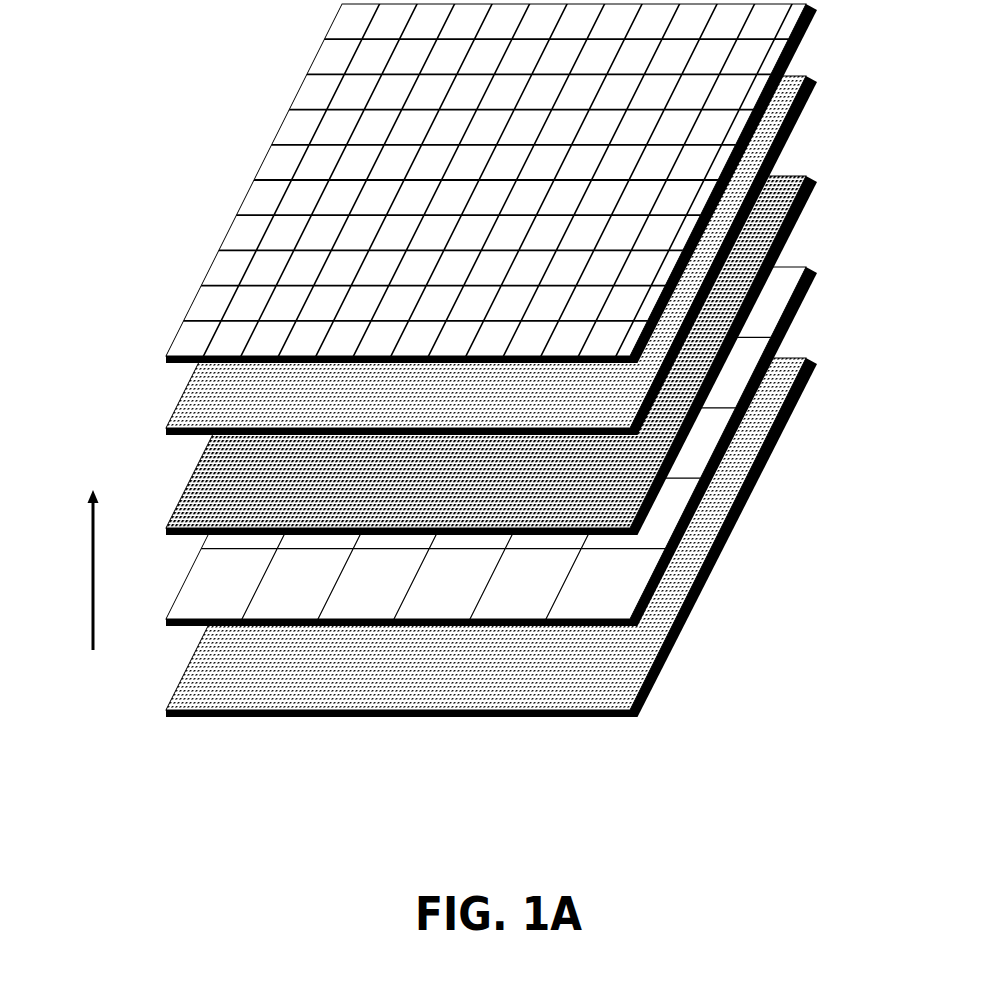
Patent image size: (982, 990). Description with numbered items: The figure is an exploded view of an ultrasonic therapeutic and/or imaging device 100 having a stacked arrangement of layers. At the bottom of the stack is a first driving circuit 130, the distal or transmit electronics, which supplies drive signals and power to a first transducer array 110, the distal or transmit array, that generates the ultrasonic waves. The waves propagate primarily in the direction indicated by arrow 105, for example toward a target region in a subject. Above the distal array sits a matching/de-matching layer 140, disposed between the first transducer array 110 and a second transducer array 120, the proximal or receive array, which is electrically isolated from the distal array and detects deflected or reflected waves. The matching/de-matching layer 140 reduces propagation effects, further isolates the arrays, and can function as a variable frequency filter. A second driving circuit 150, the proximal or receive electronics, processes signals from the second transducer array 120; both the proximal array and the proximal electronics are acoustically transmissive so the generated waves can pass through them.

The ultrasonic therapeutic and/or imaging device 100 is at (526, 405).
The arrow 105 is at (91, 632).
The first transducer array 110 is at (523, 446).
The second transducer array 120 is at (526, 183).
The first driving circuit 130 is at (523, 537).
The matching/de-matching layer 140 is at (523, 355).
The second driving circuit 150 is at (523, 255).